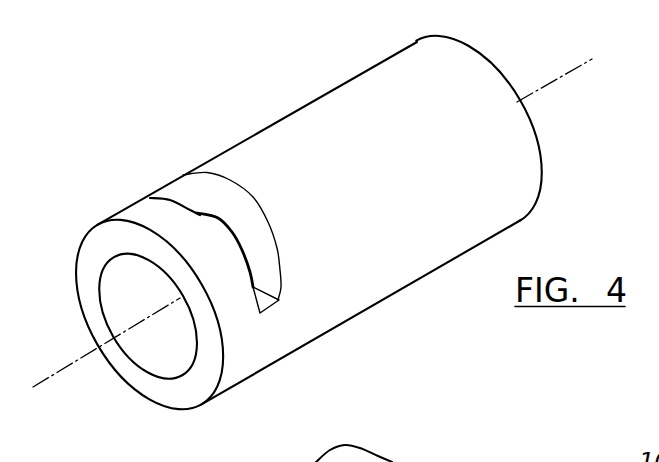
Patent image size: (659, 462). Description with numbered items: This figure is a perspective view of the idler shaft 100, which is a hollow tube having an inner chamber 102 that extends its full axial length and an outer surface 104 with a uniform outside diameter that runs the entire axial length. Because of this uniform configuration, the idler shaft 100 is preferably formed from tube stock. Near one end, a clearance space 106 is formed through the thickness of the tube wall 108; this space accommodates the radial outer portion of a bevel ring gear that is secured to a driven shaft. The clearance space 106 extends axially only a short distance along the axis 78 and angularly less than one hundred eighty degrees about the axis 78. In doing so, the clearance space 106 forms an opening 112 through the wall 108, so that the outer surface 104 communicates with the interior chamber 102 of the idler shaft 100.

The idler shaft 100 is at (180, 91).
The inner chamber 102 is at (122, 270).
The outer surface 104 is at (438, 273).
The clearance space 106 is at (202, 197).
The tube wall 108 is at (95, 315).
The opening 112 is at (240, 253).
The axis 78 is at (62, 373).